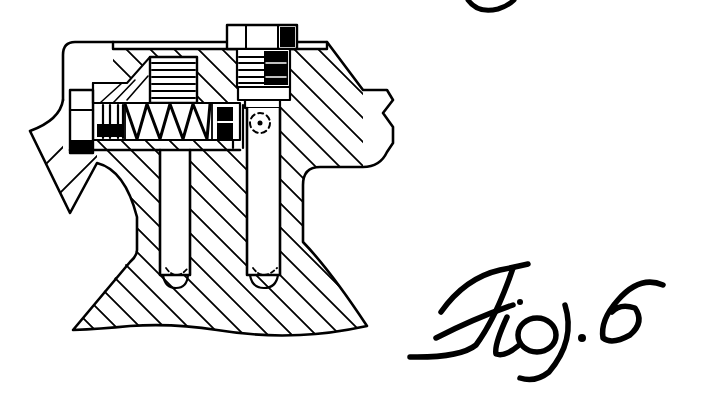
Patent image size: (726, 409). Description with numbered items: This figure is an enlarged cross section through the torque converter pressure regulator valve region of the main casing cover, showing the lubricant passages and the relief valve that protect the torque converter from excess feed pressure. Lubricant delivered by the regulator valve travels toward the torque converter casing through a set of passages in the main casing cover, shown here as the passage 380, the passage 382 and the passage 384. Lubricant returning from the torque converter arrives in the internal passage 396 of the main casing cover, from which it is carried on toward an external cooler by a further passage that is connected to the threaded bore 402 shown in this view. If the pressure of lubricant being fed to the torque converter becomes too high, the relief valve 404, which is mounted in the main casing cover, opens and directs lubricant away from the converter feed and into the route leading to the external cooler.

The passage 380 is at (302, 107).
The passage 382 is at (283, 183).
The passage 384 is at (267, 262).
The internal passage 396 is at (187, 265).
The threaded bore 402 is at (193, 58).
The relief valve 404 is at (206, 212).